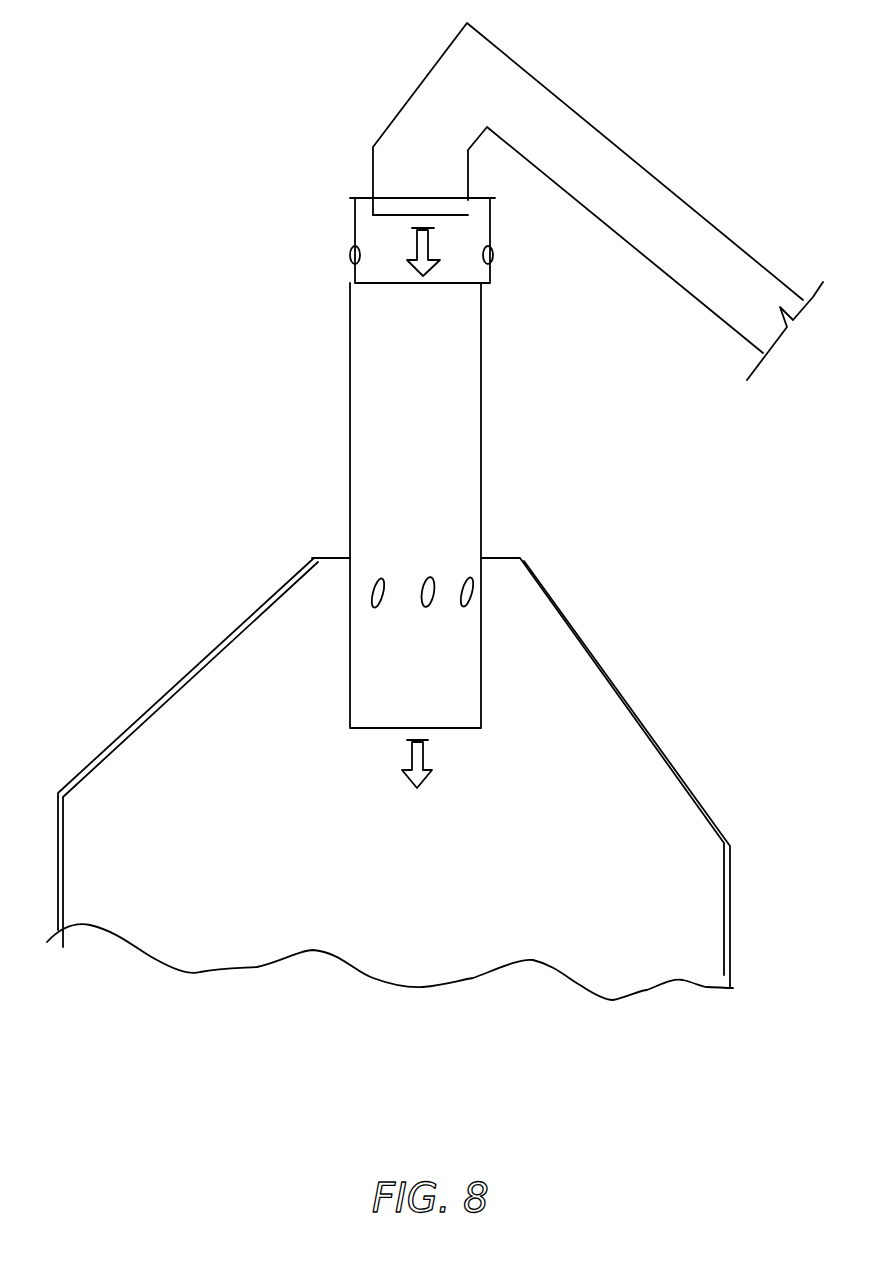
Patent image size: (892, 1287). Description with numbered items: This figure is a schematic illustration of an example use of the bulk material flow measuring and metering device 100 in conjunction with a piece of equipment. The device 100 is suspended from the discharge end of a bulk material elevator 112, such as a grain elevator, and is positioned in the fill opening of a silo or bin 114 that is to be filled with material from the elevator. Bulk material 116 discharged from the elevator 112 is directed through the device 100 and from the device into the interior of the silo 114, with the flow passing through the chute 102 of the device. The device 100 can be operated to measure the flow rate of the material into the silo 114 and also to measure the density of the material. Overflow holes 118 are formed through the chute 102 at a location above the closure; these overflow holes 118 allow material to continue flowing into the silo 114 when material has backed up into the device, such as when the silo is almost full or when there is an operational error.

The bulk material flow measuring and metering device 100 is at (349, 421).
The chute 102 is at (470, 385).
The bulk material elevator 112 is at (603, 153).
The silo or bin 114 is at (653, 743).
The bulk material 116 is at (410, 258).
The overflow holes 118 is at (380, 582).